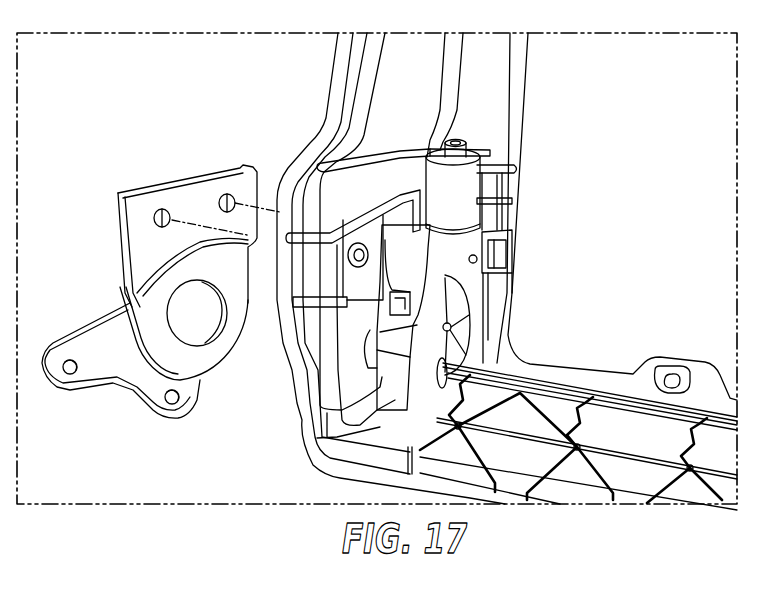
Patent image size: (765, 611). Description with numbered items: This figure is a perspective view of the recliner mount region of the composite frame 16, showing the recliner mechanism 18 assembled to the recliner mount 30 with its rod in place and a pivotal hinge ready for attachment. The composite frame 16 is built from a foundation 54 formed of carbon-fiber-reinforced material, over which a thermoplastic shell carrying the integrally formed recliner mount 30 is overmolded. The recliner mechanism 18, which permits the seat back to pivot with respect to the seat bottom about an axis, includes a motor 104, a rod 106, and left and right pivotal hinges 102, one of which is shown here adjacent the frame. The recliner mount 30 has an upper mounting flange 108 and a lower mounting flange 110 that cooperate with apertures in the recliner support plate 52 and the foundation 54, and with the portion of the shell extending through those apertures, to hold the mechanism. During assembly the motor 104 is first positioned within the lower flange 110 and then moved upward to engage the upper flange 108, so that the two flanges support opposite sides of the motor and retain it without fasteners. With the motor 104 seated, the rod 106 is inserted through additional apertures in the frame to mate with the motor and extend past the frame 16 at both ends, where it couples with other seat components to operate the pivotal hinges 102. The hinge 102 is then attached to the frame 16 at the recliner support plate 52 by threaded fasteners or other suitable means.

The composite frame 16 is at (483, 84).
The recliner mechanism 18 is at (388, 383).
The recliner mount 30 is at (483, 202).
The recliner support plate 52 is at (348, 280).
The foundation 54 is at (373, 133).
The pivotal hinge 102 is at (112, 298).
The motor 104 is at (477, 253).
The rod 106 is at (567, 392).
The upper mounting flange 108 is at (493, 161).
The lower mounting flange 110 is at (399, 196).